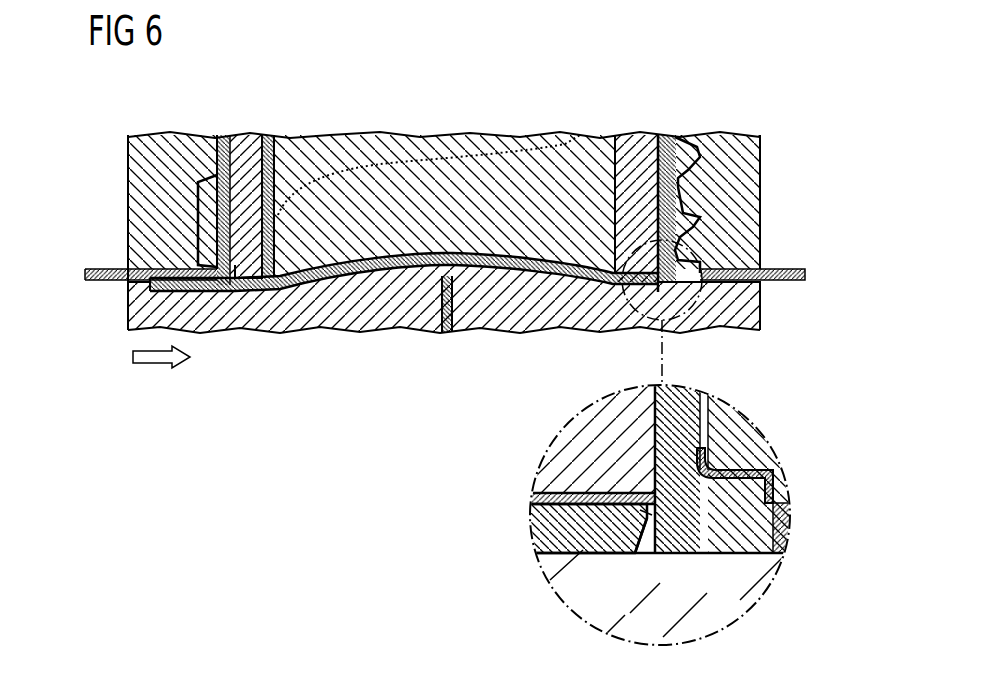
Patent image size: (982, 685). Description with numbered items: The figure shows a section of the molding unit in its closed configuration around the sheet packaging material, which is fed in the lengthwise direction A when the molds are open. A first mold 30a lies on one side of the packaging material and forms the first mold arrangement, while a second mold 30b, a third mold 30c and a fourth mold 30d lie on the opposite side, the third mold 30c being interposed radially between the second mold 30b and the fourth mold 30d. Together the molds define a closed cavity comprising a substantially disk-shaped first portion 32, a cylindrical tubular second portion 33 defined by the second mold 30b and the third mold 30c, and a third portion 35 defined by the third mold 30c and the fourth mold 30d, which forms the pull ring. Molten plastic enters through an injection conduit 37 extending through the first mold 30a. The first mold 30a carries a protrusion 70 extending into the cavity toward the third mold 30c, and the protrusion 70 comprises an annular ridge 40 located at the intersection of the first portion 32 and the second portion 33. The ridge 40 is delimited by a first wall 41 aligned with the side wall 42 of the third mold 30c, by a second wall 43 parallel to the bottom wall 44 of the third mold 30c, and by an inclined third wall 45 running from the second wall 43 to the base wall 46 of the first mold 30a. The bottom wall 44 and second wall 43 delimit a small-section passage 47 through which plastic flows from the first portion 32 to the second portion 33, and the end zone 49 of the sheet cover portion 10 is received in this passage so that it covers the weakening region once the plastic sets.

The sheet cover portion 10 is at (513, 256).
The first mold 30a is at (273, 322).
The second mold 30b is at (165, 142).
The third mold 30c is at (250, 138).
The fourth mold 30d is at (477, 146).
The first portion 32 is at (337, 284).
The second portion 33 is at (674, 146).
The third portion 35 is at (260, 236).
The injection conduit 37 is at (452, 297).
The ridge 40 is at (645, 522).
The first wall 41 is at (658, 532).
The side wall 42 is at (663, 465).
The second wall 43 is at (647, 507).
The bottom wall 44 is at (575, 494).
The third wall 45 is at (642, 525).
The base wall 46 is at (548, 548).
The small-section passage 47 is at (664, 512).
The end zone 49 is at (650, 490).
The protrusion 70 is at (645, 555).
The lengthwise direction A is at (157, 357).